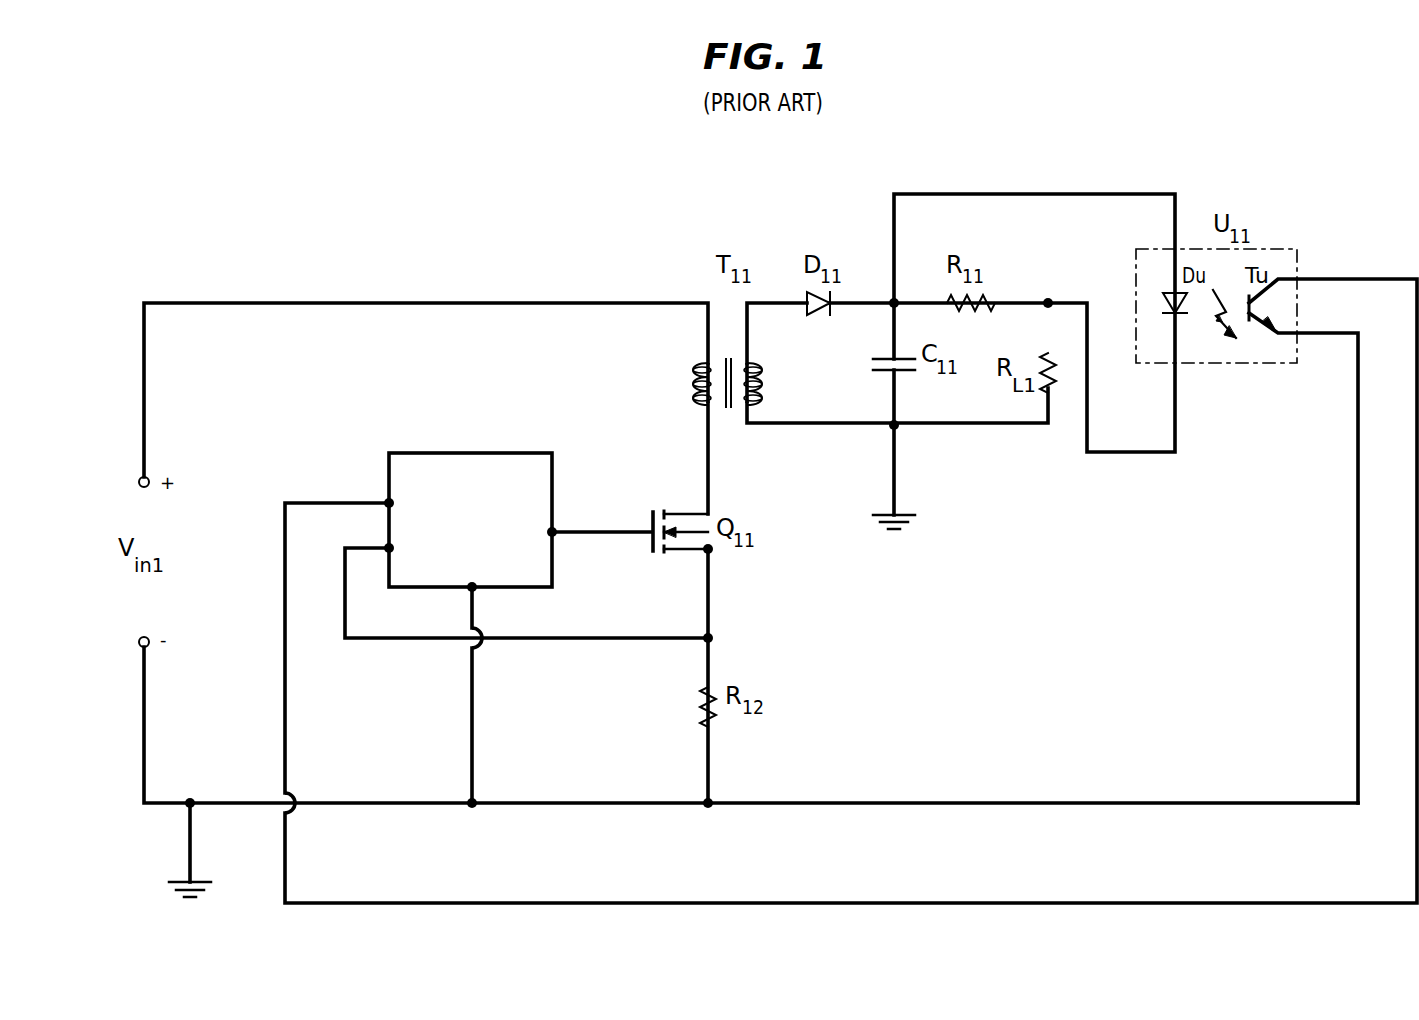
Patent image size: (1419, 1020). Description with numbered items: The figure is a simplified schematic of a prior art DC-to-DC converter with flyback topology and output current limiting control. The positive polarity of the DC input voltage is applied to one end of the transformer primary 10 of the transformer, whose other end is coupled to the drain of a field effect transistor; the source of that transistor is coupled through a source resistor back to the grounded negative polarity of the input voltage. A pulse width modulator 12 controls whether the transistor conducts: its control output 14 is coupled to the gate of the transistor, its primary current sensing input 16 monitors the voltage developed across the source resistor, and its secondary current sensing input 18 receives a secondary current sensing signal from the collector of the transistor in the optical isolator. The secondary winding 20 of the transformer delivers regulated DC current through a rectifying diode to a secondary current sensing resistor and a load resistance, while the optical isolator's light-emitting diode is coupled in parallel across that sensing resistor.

The transformer primary 10 is at (690, 378).
The secondary winding 20 is at (765, 378).
The pulse width modulator 12 is at (414, 453).
The control output 14 is at (552, 532).
The primary current sensing input 16 is at (389, 548).
The secondary current sensing input 18 is at (389, 503).